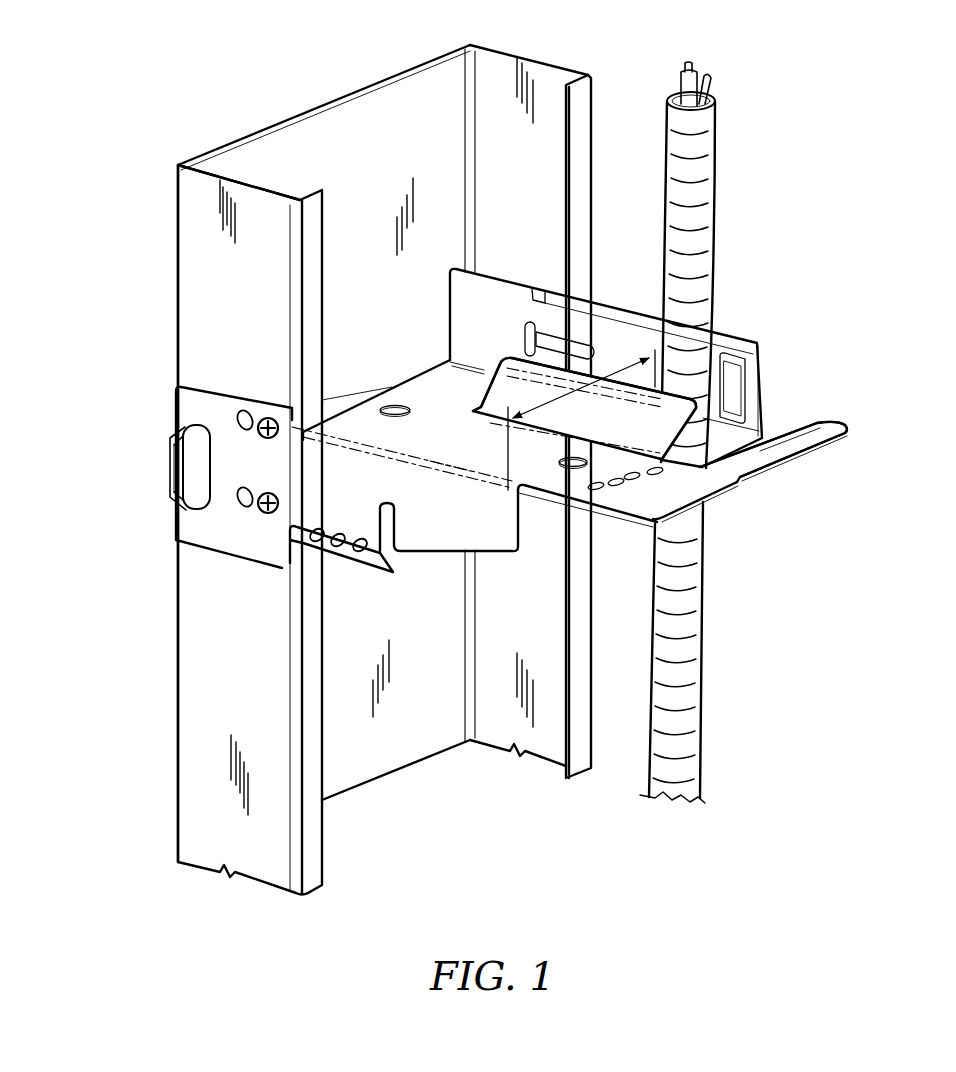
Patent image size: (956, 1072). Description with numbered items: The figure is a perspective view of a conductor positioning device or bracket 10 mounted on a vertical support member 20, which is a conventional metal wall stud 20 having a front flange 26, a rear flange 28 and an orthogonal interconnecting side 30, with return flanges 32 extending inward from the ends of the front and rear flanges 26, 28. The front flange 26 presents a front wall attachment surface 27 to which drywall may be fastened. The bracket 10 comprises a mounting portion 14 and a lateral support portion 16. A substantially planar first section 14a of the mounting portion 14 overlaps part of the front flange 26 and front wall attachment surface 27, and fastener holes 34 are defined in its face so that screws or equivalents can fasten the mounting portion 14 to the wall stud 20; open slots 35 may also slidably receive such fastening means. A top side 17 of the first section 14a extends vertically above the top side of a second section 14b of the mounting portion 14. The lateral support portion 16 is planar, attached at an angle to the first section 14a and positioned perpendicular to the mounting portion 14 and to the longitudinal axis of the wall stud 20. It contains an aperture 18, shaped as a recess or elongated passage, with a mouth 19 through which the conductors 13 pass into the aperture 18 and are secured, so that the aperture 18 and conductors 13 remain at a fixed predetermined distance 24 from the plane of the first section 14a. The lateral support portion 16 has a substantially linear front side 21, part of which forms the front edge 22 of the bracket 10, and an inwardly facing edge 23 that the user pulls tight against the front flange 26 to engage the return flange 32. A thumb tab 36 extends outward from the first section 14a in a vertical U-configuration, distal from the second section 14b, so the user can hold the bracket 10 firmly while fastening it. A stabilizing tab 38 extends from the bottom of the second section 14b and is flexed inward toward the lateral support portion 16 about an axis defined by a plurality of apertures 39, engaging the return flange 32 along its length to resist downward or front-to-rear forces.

The bracket 10 is at (776, 301).
The conductors 13 is at (710, 151).
The mounting portion 14 is at (168, 513).
The first section of the mounting portion 14a is at (187, 395).
The second section of the mounting portion 14b is at (398, 500).
The lateral support portion 16 is at (562, 481).
The top side 17 is at (183, 386).
The aperture 18 is at (730, 449).
The mouth 19 is at (730, 449).
The support member 20 is at (173, 172).
The front side 21 is at (543, 495).
The front edge 22 is at (445, 470).
The inwardly facing edge 23 is at (392, 387).
The fixed predetermined distance 24 is at (655, 350).
The front flange 26 is at (200, 243).
The front wall attachment surface 27 is at (200, 243).
The rear flange 28 is at (508, 67).
The interconnecting side 30 is at (268, 152).
The return flanges 32 is at (316, 203).
The fastener holes 34 is at (268, 511).
The open slots 35 is at (372, 555).
The thumb tab 36 is at (176, 473).
The stabilizing tab 38 is at (340, 546).
The apertures 39 is at (308, 534).